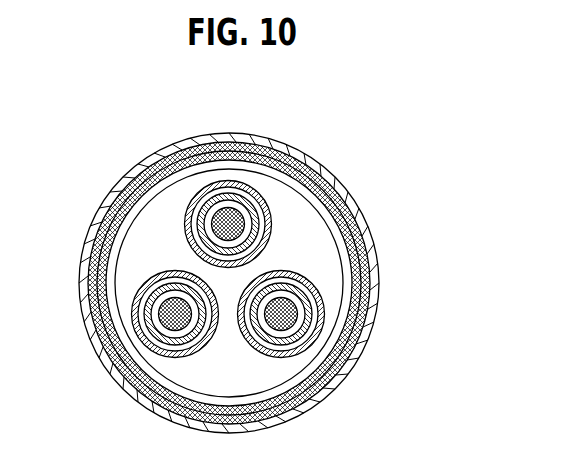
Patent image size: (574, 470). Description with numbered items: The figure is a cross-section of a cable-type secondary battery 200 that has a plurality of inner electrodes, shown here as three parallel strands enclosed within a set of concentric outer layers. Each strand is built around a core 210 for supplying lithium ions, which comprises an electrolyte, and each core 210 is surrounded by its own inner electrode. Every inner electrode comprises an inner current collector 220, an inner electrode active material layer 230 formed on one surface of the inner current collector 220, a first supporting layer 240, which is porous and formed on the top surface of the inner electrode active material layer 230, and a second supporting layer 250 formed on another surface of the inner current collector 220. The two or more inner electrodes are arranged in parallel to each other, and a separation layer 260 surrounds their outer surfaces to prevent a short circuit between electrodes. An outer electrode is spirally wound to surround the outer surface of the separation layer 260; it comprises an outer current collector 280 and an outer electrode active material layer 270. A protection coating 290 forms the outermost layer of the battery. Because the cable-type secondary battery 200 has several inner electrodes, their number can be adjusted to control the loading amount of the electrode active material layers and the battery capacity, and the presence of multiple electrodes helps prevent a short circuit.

The cable-type secondary battery 200 is at (121, 153).
The core for supplying lithium ions 210 is at (209, 185).
The inner current collector 220 is at (246, 197).
The inner electrode active material layer 230 is at (259, 193).
The first supporting layer 240 is at (315, 222).
The second supporting layer 250 is at (230, 209).
The separation layer 260 is at (342, 195).
The outer electrode active material layer 270 is at (356, 219).
The outer current collector 280 is at (368, 236).
The protection coating 290 is at (378, 261).